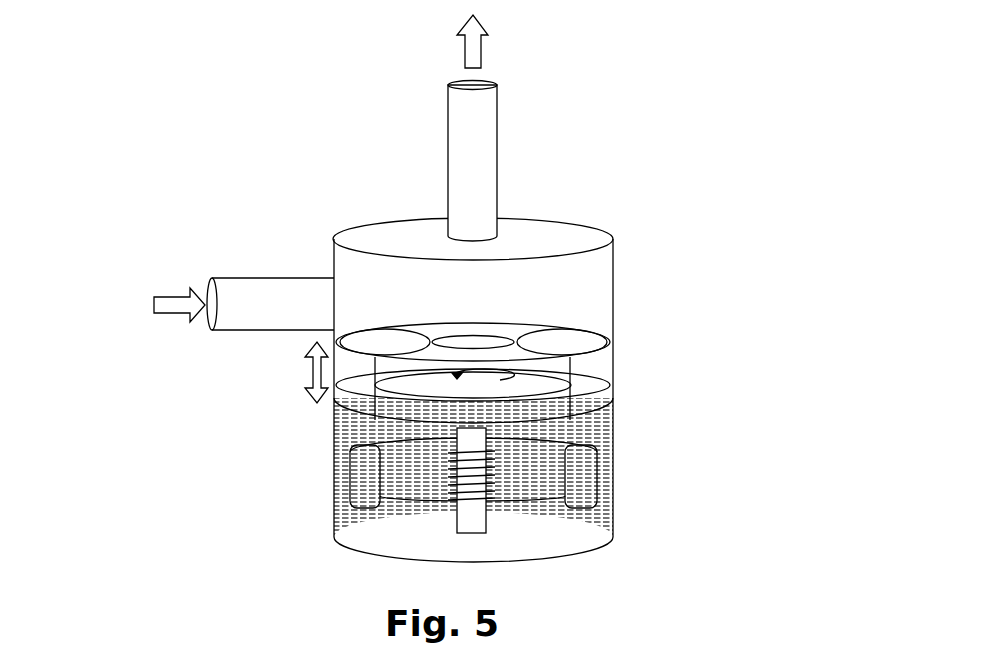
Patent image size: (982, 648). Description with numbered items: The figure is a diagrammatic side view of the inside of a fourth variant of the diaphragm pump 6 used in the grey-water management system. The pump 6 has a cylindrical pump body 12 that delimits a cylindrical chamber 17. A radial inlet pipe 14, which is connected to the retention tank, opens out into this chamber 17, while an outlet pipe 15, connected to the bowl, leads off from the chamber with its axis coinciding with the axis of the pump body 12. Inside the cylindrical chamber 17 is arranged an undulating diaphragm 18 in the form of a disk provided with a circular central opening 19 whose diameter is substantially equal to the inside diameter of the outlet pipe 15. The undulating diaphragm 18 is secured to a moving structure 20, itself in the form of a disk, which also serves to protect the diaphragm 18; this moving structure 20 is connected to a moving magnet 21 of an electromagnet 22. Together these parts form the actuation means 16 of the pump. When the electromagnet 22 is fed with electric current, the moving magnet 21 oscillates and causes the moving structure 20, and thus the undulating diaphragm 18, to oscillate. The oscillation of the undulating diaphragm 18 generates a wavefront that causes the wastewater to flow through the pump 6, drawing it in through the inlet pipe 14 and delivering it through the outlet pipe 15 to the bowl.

The diaphragm pump 6 is at (333, 192).
The cylindrical pump body 12 is at (615, 274).
The inlet pipe 14 is at (257, 278).
The outlet pipe 15 is at (498, 137).
The actuation means 16 is at (398, 537).
The cylindrical chamber 17 is at (598, 304).
The undulating diaphragm 18 is at (608, 387).
The circular central opening 19 is at (362, 392).
The moving structure 20 is at (347, 361).
The moving magnet 21 is at (600, 477).
The electromagnet 22 is at (548, 537).